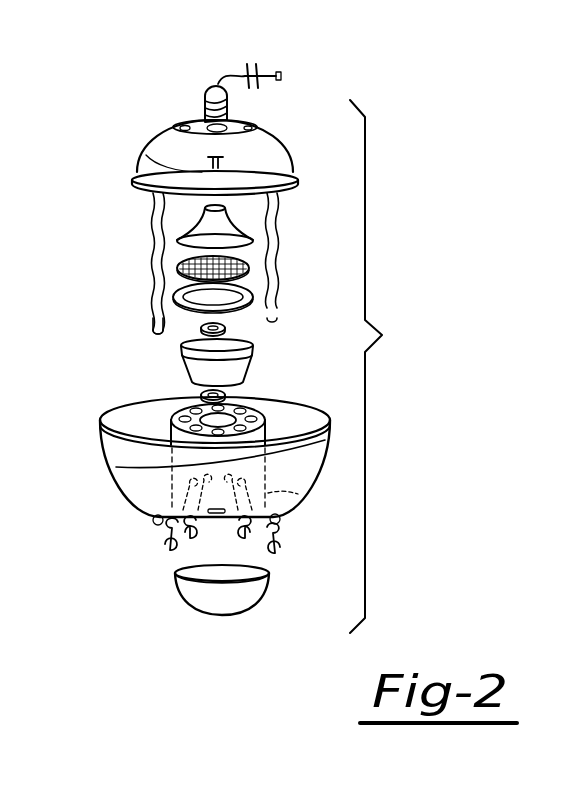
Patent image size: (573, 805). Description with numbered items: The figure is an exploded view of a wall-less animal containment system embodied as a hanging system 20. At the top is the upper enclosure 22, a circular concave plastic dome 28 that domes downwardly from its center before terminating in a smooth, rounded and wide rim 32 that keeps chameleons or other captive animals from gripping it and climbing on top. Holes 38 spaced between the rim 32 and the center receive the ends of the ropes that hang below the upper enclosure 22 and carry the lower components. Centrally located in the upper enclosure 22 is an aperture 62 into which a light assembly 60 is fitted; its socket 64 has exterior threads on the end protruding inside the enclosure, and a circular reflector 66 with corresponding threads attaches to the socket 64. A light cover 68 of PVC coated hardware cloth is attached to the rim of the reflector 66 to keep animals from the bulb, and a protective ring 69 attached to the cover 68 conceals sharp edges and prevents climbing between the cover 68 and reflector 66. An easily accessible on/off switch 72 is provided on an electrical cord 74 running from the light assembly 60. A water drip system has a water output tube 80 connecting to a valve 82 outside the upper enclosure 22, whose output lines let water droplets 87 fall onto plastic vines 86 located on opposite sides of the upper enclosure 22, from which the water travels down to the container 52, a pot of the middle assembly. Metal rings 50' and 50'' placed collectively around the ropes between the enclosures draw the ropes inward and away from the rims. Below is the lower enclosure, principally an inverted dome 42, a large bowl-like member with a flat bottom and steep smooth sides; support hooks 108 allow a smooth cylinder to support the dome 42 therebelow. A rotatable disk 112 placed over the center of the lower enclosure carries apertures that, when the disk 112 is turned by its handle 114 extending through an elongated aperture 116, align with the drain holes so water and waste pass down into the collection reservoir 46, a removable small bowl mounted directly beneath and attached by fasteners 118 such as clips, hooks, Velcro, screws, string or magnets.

The hanging system 20 is at (347, 42).
The upper enclosure 22 is at (318, 188).
The dome 28 is at (294, 171).
The rim 32 is at (292, 193).
The holes 38 is at (184, 124).
The inverted dome 42 is at (333, 431).
The collection reservoir 46 is at (268, 590).
The metal ring 50' is at (261, 342).
The metal ring 50'' is at (260, 382).
The container 52 is at (190, 370).
The light assembly 60 is at (192, 238).
The aperture 62 is at (204, 123).
The socket 64 is at (228, 106).
The circular reflector 66 is at (253, 228).
The light cover 68 is at (250, 276).
The protective ring 69 is at (258, 298).
The on/off switch 72 is at (205, 92).
The electrical cord 74 is at (270, 72).
The water output tube 80 is at (143, 155).
The valve 82 is at (138, 173).
The plastic vines 86 is at (153, 250).
The water droplets 87 is at (153, 320).
The support hooks 108 is at (265, 497).
The rotatable disk 112 is at (150, 421).
The handle 114 is at (120, 465).
The elongated aperture 116 is at (168, 536).
The fasteners 118 is at (281, 553).